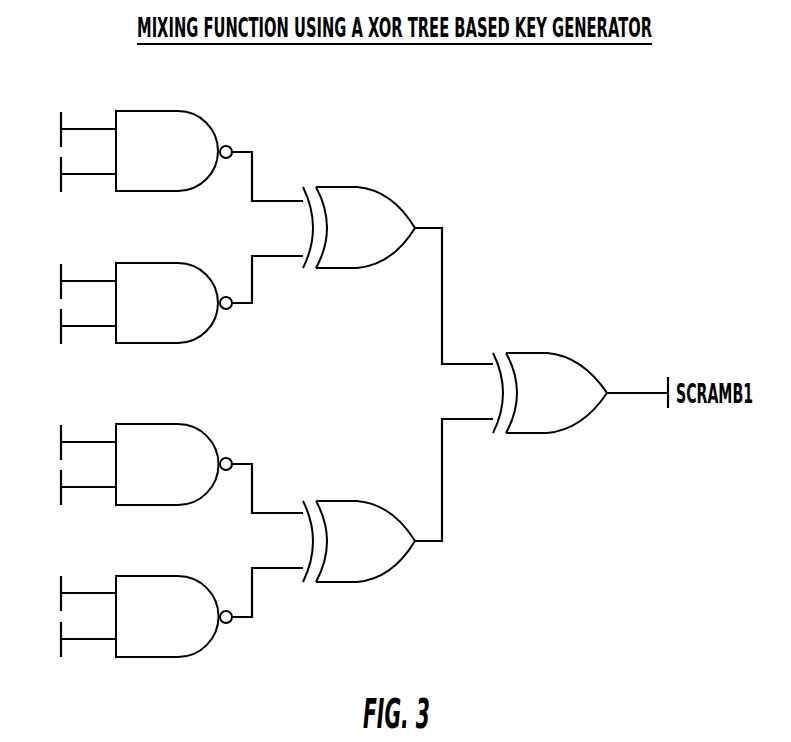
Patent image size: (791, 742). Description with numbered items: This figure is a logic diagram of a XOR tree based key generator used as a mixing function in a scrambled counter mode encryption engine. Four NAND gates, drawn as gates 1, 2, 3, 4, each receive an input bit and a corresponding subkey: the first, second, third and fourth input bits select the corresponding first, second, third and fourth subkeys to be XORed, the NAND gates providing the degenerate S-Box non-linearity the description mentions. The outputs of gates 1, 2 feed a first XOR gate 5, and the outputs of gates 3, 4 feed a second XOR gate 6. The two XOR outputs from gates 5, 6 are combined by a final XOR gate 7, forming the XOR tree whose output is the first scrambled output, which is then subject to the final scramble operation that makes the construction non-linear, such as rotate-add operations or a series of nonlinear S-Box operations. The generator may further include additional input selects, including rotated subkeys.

The NAND gate 1 is at (126, 169).
The NAND gate 2 is at (126, 322).
The NAND gate 3 is at (126, 483).
The NAND gate 4 is at (126, 634).
The XOR gate 5 is at (359, 247).
The XOR gate 6 is at (359, 560).
The XOR gate 7 is at (550, 411).